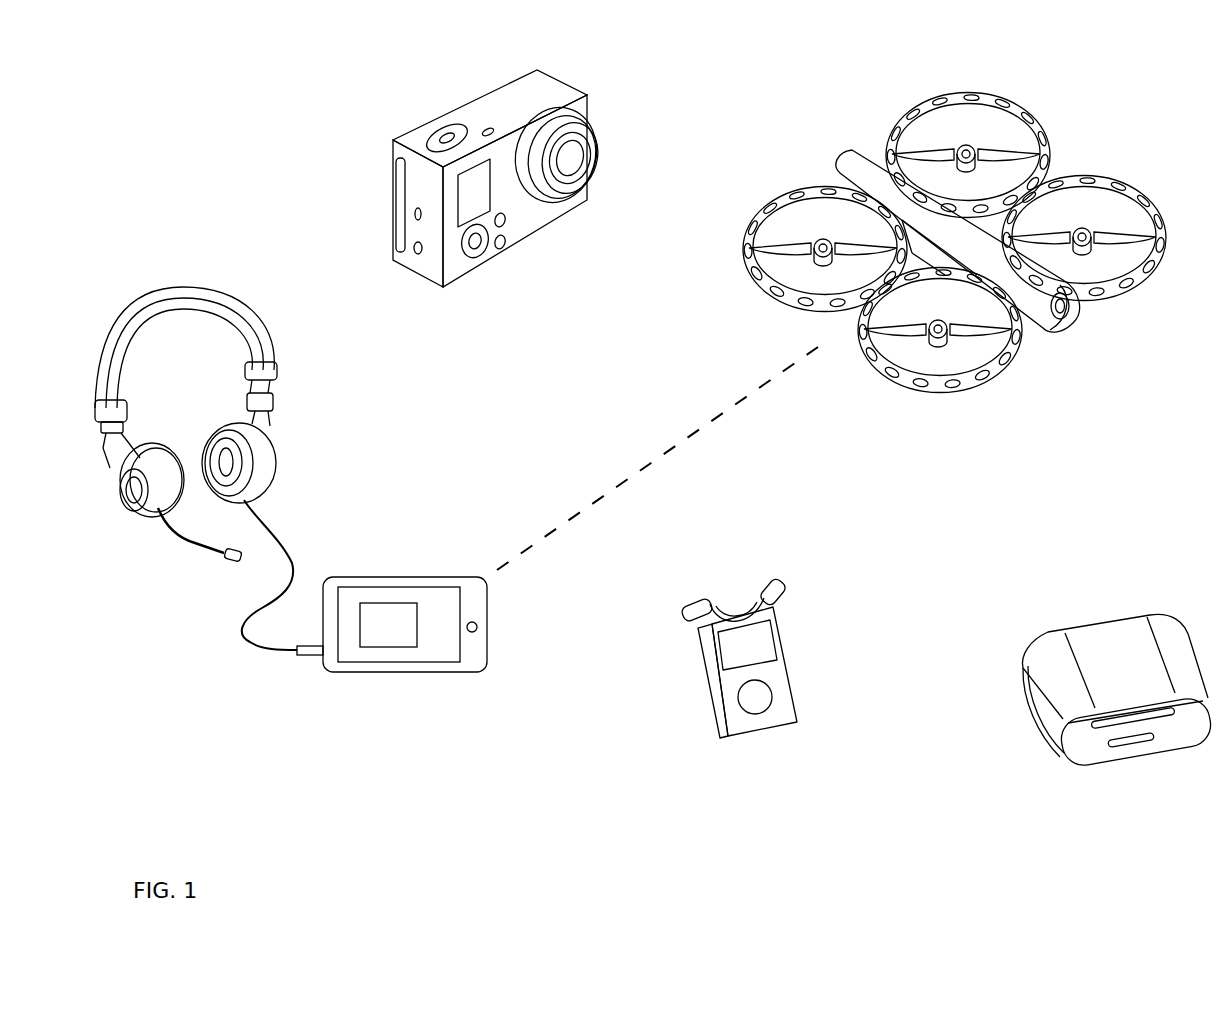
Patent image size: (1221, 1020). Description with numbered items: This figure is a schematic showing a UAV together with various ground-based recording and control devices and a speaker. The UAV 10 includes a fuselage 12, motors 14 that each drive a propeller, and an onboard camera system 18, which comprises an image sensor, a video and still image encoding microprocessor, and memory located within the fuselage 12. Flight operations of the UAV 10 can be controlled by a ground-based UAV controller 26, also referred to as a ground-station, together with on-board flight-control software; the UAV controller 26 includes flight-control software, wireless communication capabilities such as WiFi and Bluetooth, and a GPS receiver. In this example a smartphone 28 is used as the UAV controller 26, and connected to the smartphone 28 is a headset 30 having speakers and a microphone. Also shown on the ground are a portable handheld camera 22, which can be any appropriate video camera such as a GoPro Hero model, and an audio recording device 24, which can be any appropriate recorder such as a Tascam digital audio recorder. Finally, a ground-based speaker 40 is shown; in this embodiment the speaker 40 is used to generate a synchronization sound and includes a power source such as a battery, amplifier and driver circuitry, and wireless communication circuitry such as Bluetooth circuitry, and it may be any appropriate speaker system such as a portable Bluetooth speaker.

The UAV 10 is at (1120, 161).
The fuselage 12 is at (825, 140).
The motors 14 is at (973, 147).
The onboard camera system 18 is at (1086, 331).
The ground-based portable handheld camera 22 is at (374, 171).
The ground-based audio recording device 24 is at (695, 744).
The ground-based UAV controller 26 is at (428, 690).
The smartphone 28 is at (452, 559).
The headset 30 is at (154, 547).
The ground-based speaker 40 is at (1083, 609).